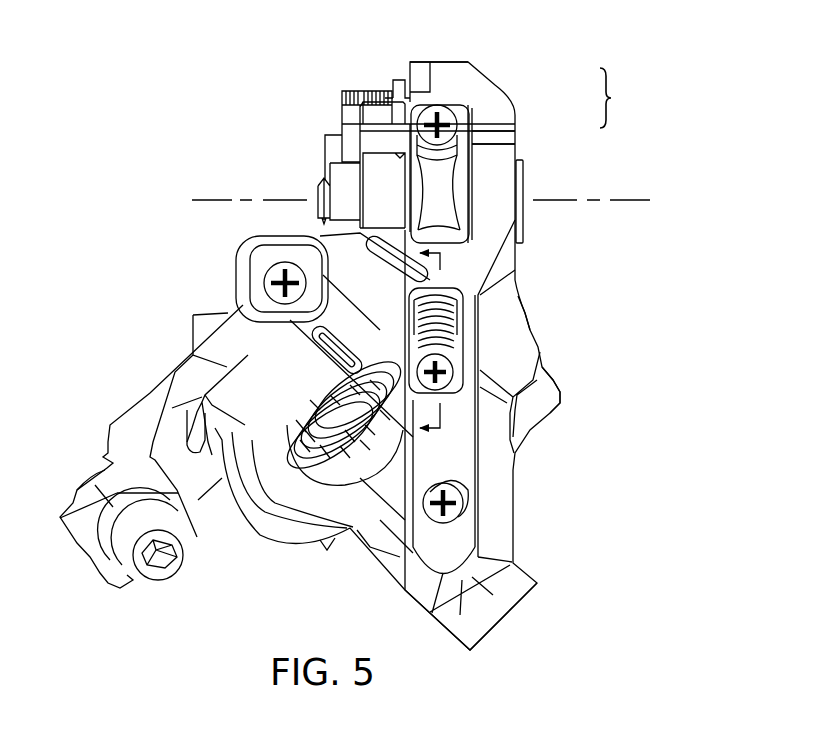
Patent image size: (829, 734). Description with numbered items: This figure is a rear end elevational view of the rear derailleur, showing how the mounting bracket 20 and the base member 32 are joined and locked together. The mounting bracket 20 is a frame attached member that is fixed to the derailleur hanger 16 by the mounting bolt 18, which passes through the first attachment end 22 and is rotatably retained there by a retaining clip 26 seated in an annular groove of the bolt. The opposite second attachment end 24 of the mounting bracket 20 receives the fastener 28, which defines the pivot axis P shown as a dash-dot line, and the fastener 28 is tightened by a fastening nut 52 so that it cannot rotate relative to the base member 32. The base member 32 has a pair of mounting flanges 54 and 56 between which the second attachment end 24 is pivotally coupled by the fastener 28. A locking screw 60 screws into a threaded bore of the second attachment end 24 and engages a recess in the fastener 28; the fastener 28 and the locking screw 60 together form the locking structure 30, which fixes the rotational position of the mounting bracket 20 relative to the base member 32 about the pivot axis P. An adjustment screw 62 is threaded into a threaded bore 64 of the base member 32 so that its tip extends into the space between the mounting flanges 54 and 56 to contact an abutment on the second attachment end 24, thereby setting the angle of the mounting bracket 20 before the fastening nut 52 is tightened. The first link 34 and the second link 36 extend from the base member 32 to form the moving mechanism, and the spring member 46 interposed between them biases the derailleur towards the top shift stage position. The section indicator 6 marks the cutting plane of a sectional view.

The section line 6 is at (438, 346).
The derailleur hanger 16 is at (245, 411).
The mounting bolt 18 is at (358, 91).
The mounting bracket 20 is at (494, 73).
The first attachment end 22 is at (447, 62).
The second attachment end 24 is at (442, 190).
The retaining clip 26 is at (399, 80).
The fastener 28 is at (522, 179).
The locking structure 30 is at (622, 98).
The base member 32 is at (532, 311).
The first link 34 is at (535, 565).
The second link 36 is at (563, 381).
The spring member 46 is at (296, 393).
The fastening nut 52 is at (343, 173).
The mounting flange 54 is at (495, 132).
The mounting flange 56 is at (377, 134).
The locking screw 60 is at (445, 117).
The adjustment screw 62 is at (450, 364).
The threaded bore 64 is at (422, 345).
The pivot axis P is at (628, 198).